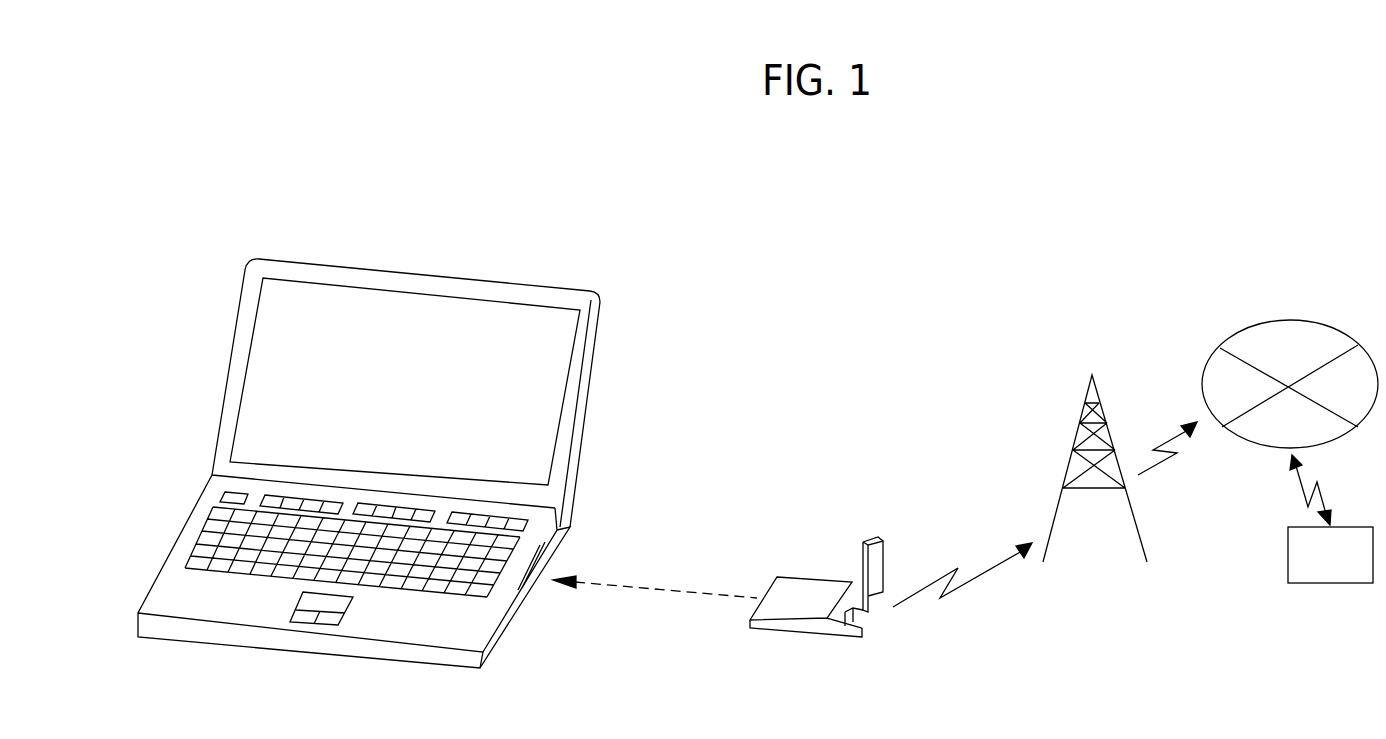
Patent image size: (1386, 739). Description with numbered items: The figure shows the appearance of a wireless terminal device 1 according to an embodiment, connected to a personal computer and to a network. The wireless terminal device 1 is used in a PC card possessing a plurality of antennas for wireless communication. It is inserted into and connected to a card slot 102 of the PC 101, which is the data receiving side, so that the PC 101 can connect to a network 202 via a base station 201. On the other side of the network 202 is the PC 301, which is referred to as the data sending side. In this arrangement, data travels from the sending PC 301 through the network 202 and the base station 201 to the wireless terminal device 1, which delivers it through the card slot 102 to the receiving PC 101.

The wireless terminal device 1 is at (807, 585).
The PC 101 is at (590, 338).
The card slot 102 is at (552, 545).
The base station 201 is at (1088, 392).
The network 202 is at (1308, 320).
The PC 301 is at (1288, 566).